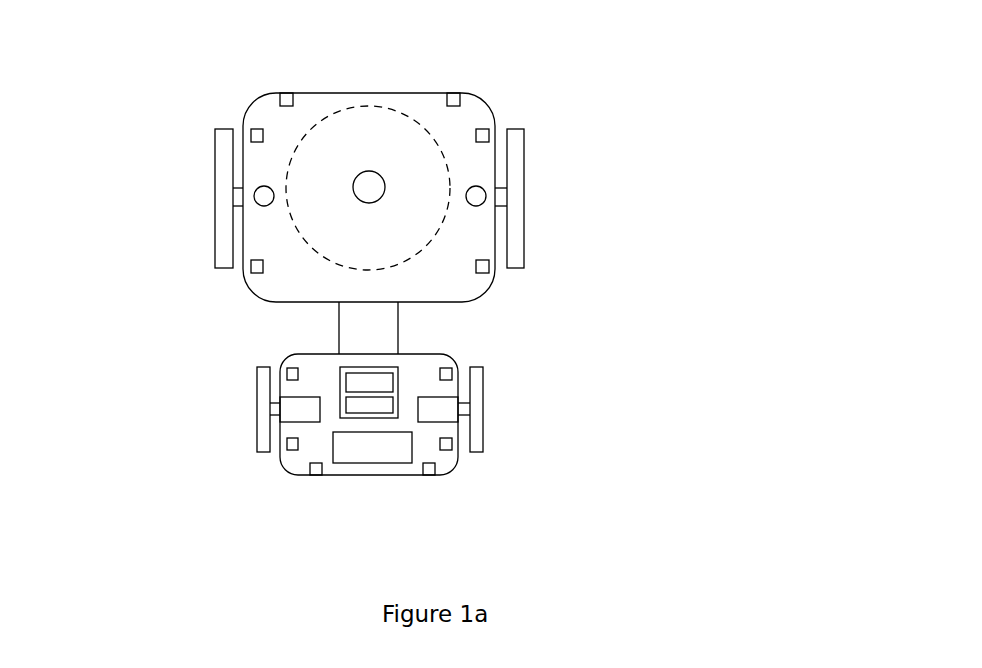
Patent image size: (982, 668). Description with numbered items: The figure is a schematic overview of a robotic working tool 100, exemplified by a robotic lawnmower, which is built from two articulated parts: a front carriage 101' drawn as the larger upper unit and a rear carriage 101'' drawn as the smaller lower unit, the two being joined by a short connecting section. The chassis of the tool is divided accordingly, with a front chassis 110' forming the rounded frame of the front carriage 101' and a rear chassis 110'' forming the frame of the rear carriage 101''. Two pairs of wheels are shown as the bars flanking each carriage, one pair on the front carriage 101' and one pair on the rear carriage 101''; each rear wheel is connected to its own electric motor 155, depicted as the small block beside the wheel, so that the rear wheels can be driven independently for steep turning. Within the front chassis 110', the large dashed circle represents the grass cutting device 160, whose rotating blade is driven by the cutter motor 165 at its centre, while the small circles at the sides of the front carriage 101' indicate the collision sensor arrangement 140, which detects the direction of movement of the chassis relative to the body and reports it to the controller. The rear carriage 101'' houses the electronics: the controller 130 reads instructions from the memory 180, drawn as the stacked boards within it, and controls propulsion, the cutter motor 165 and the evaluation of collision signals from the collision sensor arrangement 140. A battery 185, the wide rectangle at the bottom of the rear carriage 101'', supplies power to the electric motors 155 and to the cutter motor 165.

The robotic working tool 100 is at (161, 73).
The front carriage 101' is at (373, 187).
The rear carriage 101'' is at (365, 461).
The front chassis 110' is at (436, 197).
The rear chassis 110'' is at (444, 451).
The controller 130 is at (393, 418).
The collision sensor arrangement 140 is at (253, 197).
The electric motor 155 is at (445, 412).
The grass cutting device 160 is at (417, 255).
The cutter motor 165 is at (368, 203).
The memory 180 is at (395, 392).
The battery 185 is at (368, 463).